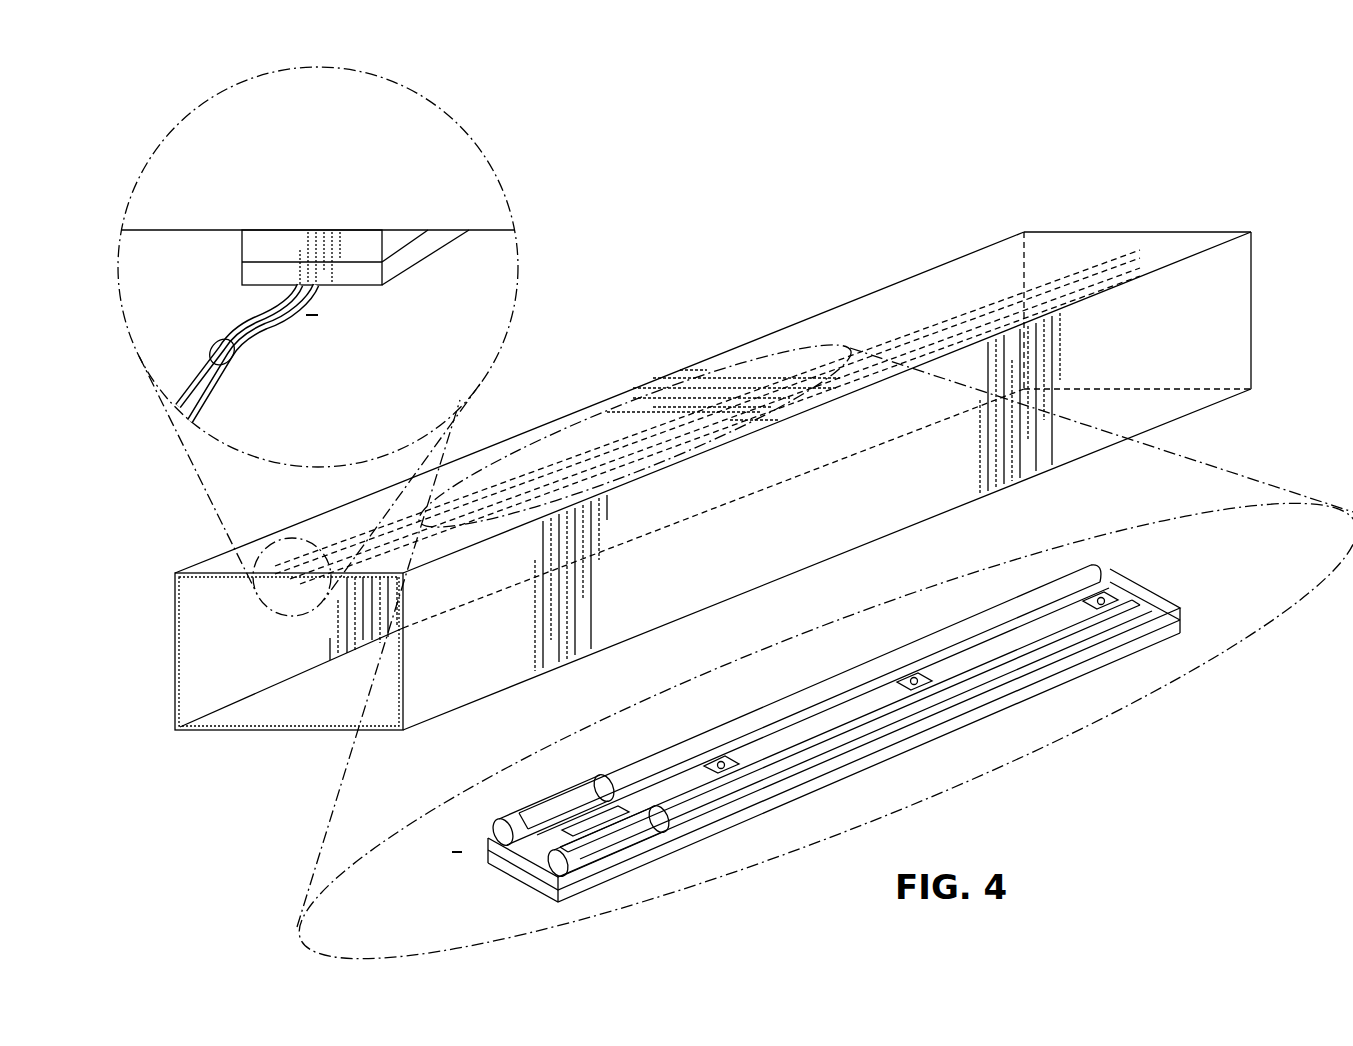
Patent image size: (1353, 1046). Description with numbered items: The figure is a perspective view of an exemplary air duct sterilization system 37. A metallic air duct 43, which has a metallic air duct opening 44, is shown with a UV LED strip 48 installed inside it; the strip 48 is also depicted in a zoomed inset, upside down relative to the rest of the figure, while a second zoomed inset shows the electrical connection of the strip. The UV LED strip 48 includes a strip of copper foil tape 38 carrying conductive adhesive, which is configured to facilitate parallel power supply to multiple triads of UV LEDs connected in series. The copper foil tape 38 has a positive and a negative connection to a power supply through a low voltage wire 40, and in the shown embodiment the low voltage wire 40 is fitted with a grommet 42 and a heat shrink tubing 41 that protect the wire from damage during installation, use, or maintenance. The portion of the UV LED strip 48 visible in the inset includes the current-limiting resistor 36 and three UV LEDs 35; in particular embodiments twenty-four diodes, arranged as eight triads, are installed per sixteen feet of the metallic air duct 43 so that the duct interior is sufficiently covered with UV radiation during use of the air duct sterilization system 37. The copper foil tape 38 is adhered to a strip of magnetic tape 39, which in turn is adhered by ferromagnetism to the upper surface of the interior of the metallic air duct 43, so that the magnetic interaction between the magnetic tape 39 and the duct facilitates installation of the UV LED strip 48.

The UV LEDs 35 is at (740, 772).
The current-limiting resistor 36 is at (612, 810).
The air duct sterilization system 37 is at (177, 95).
The strip of copper foil tape 38 is at (398, 271).
The strip of magnetic tape 39 is at (403, 239).
The low voltage wire 40 is at (252, 338).
The heat shrink tubing 41 is at (322, 294).
The grommet 42 is at (208, 342).
The metallic air duct 43 is at (207, 566).
The metallic air duct opening 44 is at (175, 632).
The UV LED strip 48 is at (484, 886).